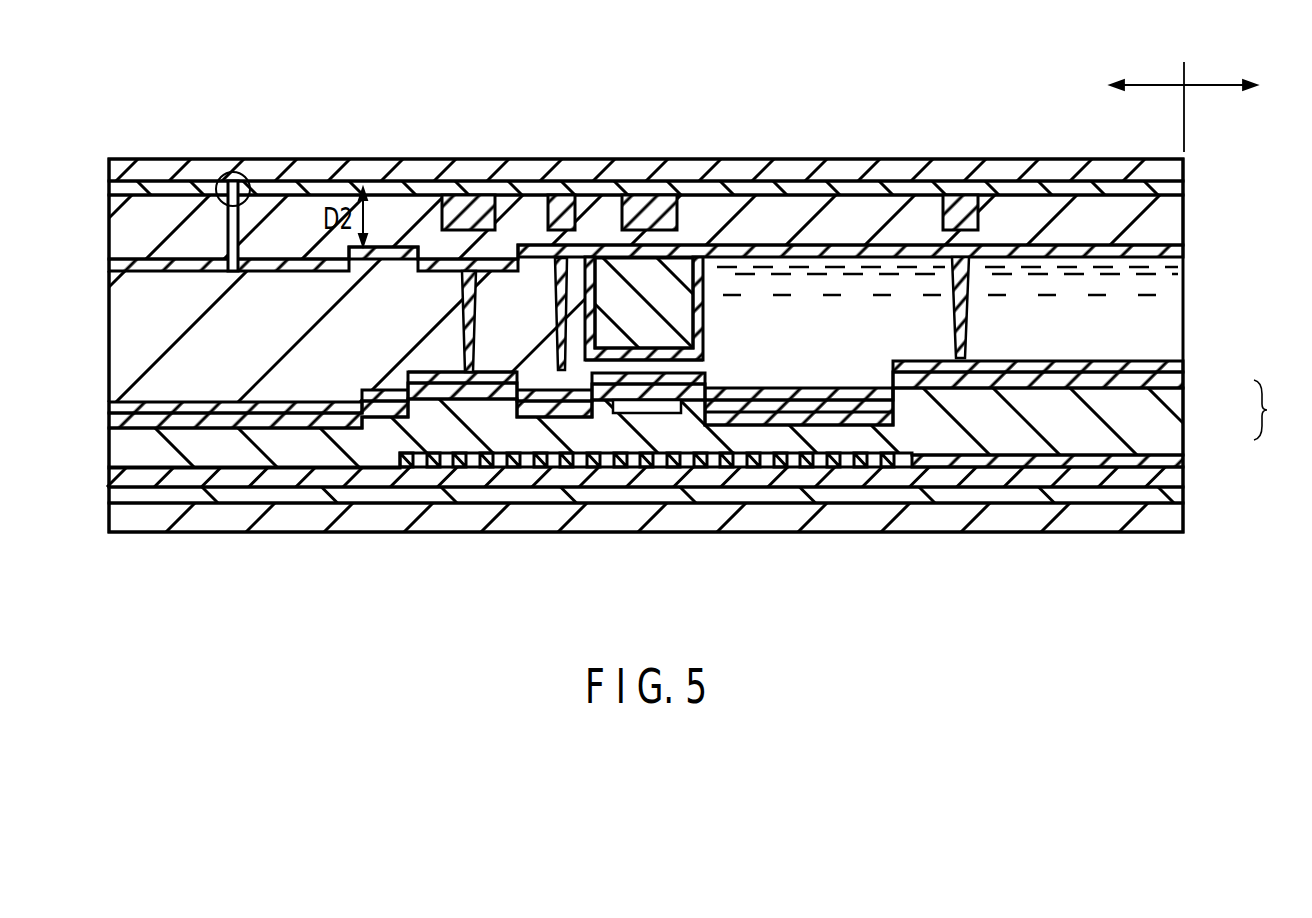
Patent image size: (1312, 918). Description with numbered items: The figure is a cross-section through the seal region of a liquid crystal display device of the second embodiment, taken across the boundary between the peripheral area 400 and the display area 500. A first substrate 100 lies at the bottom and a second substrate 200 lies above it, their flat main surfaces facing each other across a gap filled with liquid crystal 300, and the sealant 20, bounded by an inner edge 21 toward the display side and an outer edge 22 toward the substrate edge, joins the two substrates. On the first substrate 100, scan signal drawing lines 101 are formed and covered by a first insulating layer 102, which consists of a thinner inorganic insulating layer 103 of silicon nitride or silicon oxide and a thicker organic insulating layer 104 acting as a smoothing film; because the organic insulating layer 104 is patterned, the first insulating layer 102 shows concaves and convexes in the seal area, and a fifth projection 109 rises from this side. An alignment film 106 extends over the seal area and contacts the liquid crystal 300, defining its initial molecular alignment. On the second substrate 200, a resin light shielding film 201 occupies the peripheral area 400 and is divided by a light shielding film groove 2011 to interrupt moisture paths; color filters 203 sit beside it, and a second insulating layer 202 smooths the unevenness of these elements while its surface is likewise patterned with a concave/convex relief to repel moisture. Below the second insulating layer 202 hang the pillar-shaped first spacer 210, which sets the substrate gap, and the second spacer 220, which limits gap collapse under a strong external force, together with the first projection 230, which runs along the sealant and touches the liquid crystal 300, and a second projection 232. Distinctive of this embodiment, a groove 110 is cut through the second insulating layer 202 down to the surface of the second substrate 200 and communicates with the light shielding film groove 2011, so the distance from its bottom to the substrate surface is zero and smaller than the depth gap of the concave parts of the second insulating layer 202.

The light shielding film groove 2011 is at (240, 172).
The sealant 20 is at (300, 288).
The outer edge 22 is at (115, 328).
The groove 110 is at (227, 237).
The second substrate 200 is at (897, 172).
The light shielding film 201 is at (1040, 188).
The second insulating layer 202 is at (1100, 215).
The color filter 203 is at (452, 203).
The first spacer 210 is at (468, 268).
The second spacer 220 is at (559, 256).
The first projection 230 is at (632, 262).
The second projection 232 is at (657, 415).
The inner edge 21 is at (672, 364).
The alignment film 106 is at (1160, 250).
The liquid crystal 300 is at (1165, 285).
The inorganic insulating layer 103 is at (1183, 382).
The organic insulating layer 104 is at (1183, 410).
The first insulating layer 102 is at (1279, 410).
The fifth projection 109 is at (480, 413).
The scan signal drawing line 101 is at (858, 480).
The first substrate 100 is at (1010, 515).
The peripheral area 400 is at (1147, 104).
The display area 500 is at (1220, 73).